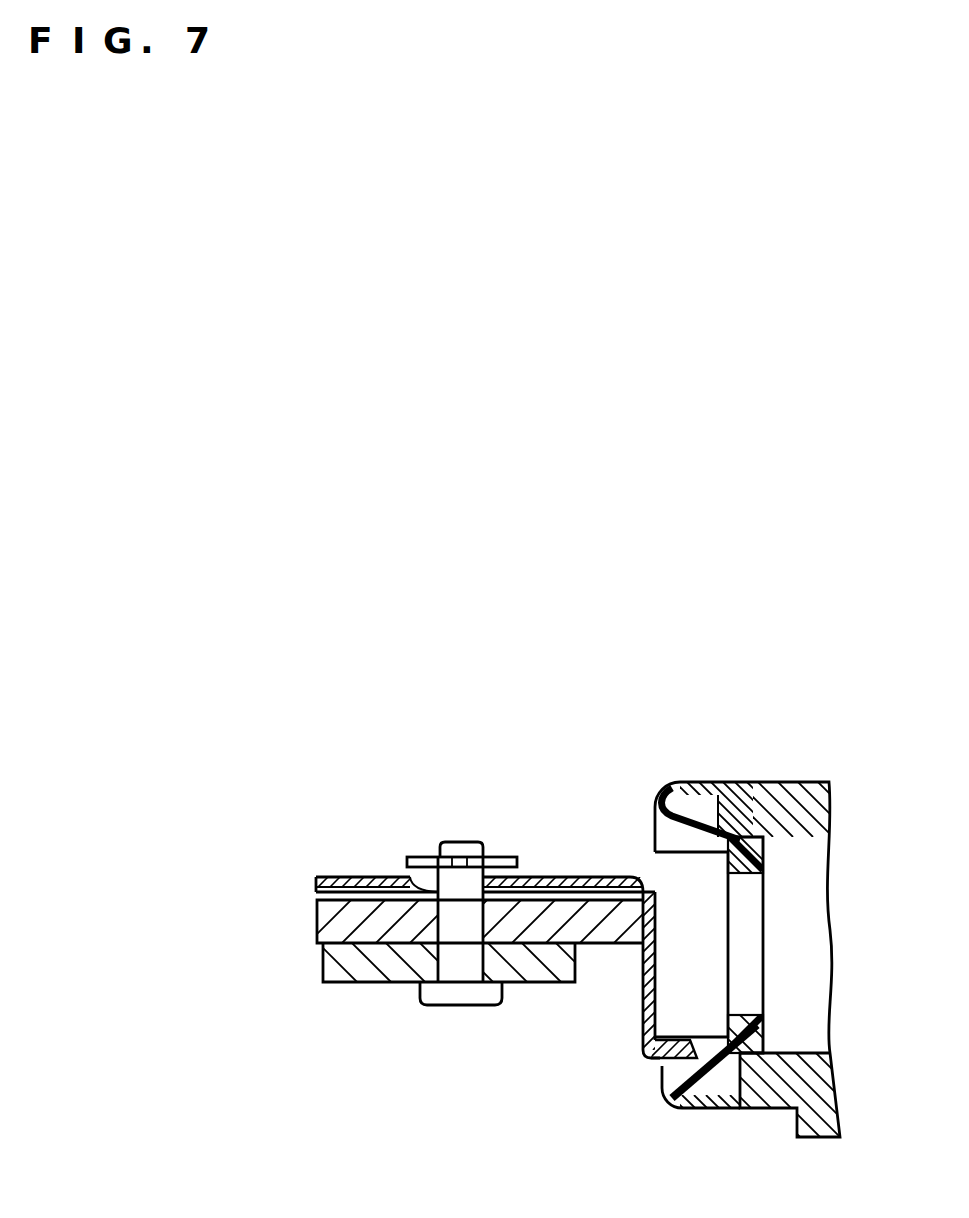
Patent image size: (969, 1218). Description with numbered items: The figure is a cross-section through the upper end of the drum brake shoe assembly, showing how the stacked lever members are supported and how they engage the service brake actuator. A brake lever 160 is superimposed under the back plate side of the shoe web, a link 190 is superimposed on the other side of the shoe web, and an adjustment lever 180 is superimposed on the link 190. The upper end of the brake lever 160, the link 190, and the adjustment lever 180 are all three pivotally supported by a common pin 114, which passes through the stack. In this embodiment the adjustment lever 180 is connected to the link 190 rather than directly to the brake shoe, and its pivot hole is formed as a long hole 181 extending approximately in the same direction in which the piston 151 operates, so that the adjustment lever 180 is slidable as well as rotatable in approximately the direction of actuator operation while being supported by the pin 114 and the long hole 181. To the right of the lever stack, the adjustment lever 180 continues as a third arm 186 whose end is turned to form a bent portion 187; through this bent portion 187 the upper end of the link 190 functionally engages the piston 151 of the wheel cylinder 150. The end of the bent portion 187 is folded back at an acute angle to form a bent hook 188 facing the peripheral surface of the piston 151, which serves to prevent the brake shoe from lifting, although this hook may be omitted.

The pin 114 is at (463, 842).
The wheel cylinder 150 is at (797, 780).
The piston 151 is at (672, 868).
The brake lever 160 is at (355, 973).
The adjustment lever 180 is at (535, 921).
The long hole 181 is at (423, 868).
The third arm 186 is at (587, 877).
The bent portion 187 is at (642, 1010).
The bent hook 188 is at (657, 1075).
The link 190 is at (315, 918).